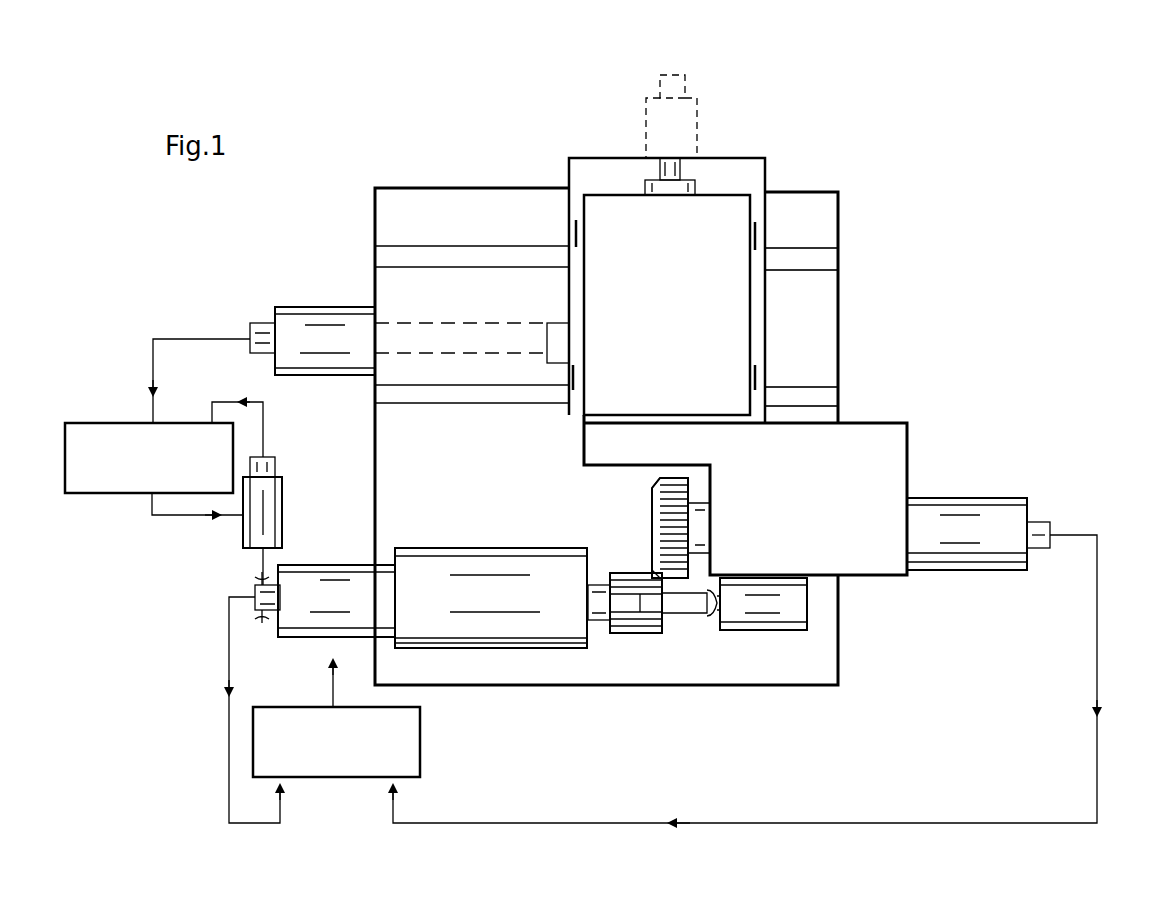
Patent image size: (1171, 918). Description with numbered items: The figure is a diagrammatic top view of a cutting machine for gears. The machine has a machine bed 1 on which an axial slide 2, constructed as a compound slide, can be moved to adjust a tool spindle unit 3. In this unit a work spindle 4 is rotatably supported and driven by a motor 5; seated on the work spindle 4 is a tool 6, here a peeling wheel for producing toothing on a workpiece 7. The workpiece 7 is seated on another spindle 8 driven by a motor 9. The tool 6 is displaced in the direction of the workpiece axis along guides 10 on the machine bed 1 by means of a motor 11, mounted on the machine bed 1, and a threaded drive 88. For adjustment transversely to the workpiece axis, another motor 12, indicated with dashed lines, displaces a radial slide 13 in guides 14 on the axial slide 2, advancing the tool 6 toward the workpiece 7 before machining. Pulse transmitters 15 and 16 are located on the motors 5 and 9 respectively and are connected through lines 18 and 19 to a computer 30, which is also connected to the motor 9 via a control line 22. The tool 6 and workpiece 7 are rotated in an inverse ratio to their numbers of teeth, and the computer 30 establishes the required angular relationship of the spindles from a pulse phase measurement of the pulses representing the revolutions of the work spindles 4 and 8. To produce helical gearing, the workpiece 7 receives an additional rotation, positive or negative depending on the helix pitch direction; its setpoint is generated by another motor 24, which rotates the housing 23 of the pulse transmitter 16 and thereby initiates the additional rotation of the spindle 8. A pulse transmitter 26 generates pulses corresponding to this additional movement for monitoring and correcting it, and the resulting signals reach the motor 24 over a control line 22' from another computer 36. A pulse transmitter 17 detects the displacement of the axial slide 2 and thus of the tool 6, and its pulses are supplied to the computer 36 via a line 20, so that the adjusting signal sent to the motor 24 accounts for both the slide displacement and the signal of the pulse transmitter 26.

The machine bed 1 is at (803, 203).
The axial slide 2 is at (750, 305).
The tool spindle unit 3 is at (885, 437).
The work spindle 4 is at (692, 548).
The motor 5 is at (955, 505).
The tool 6 is at (676, 548).
The workpiece 7 is at (640, 633).
The spindle 8 is at (598, 610).
The motor 9 is at (300, 630).
The guides 10 is at (825, 255).
The motor 11 is at (312, 323).
The motor 12 is at (660, 122).
The radial slide 13 is at (715, 345).
The guides 14 is at (768, 230).
The pulse transmitter 15 is at (1037, 525).
The pulse transmitter 16 is at (255, 585).
The pulse transmitter 17 is at (262, 323).
The line 18 is at (1097, 668).
The line 19 is at (229, 787).
The line 20 is at (153, 345).
The control line 22 is at (234, 699).
The control line 22' is at (167, 524).
The housing 23 is at (255, 608).
The motor 24 is at (262, 520).
The pulse transmitter 26 is at (275, 465).
The computer 30 is at (342, 765).
The computer 36 is at (103, 437).
The threaded drive 88 is at (552, 323).